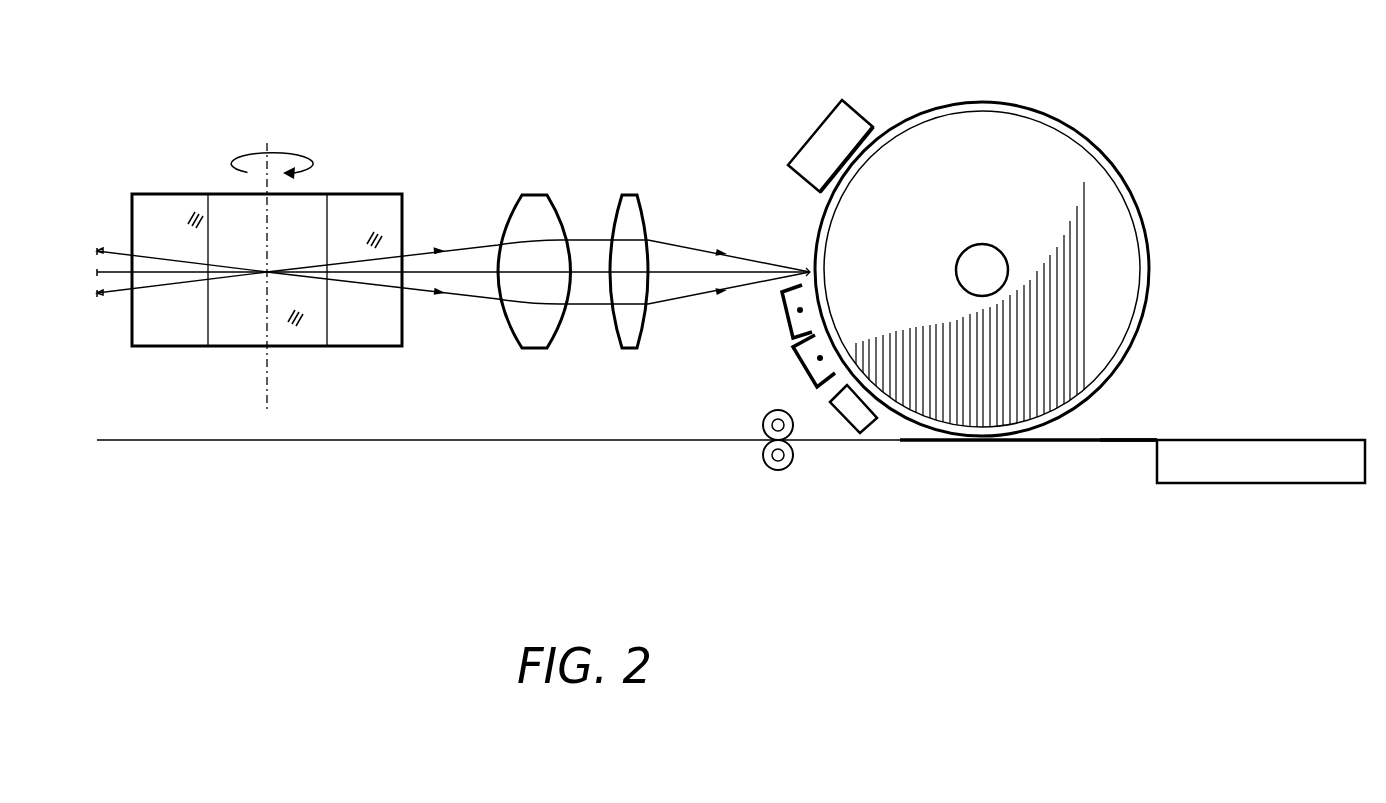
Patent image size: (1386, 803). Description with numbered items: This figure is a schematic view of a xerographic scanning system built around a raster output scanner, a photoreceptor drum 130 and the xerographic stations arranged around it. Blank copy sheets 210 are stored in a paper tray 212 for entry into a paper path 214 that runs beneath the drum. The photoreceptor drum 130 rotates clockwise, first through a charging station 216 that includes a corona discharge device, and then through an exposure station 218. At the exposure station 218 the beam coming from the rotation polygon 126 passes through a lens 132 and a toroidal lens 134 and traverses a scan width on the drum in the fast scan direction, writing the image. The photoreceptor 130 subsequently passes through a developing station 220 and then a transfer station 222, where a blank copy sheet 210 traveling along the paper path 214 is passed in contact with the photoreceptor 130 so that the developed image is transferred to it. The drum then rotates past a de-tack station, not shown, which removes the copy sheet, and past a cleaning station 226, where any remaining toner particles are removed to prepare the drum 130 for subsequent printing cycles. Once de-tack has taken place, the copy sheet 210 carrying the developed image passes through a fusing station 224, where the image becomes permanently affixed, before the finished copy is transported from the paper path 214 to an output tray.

The rotation polygon 126 is at (190, 350).
The photoreceptor drum 130 is at (1100, 152).
The lens 132 is at (525, 195).
The toroidal lens 134 is at (628, 195).
The blank copy sheets 210 is at (1122, 440).
The paper tray 212 is at (1235, 440).
The paper path 214 is at (730, 443).
The charging station 216 is at (778, 308).
The exposure station 218 is at (810, 268).
The developing station 220 is at (850, 112).
The transfer station 222 is at (975, 443).
The fusing station 224 is at (780, 478).
The cleaning station 226 is at (830, 410).